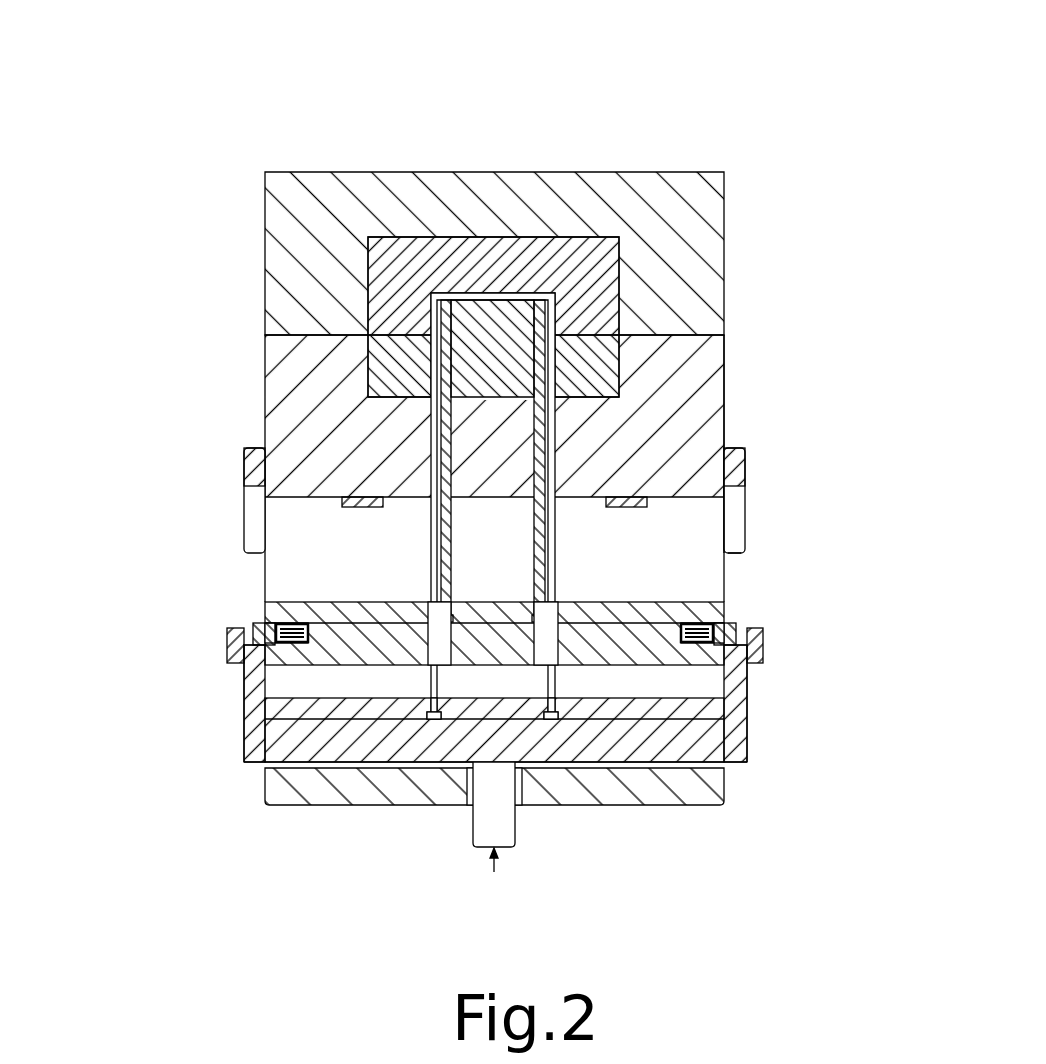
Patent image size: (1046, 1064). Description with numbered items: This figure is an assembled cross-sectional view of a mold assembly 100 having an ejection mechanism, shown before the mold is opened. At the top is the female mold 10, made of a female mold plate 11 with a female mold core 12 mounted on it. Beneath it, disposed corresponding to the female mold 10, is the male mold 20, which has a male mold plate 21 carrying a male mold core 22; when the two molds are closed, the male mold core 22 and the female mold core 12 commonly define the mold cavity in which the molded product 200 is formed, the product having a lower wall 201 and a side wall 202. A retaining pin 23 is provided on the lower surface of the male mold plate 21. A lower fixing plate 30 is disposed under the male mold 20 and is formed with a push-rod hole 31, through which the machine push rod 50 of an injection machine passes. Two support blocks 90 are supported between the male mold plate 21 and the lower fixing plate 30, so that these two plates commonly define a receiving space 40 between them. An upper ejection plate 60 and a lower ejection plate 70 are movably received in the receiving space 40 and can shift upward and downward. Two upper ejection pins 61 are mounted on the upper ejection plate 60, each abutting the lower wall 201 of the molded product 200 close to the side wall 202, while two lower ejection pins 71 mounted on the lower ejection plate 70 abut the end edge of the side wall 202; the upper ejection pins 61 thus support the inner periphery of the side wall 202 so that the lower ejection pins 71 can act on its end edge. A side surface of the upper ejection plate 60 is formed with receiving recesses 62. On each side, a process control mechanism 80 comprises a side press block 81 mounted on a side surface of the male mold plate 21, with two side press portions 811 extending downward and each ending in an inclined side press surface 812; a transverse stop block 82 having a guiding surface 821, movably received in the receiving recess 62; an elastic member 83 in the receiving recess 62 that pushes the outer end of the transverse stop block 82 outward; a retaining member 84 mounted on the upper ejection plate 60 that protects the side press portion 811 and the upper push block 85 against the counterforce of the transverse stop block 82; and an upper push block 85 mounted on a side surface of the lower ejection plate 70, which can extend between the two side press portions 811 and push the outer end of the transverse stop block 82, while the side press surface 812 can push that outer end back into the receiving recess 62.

The mold assembly 100 is at (192, 32).
The female mold 10 is at (127, 172).
The female mold plate 11 is at (318, 213).
The female mold core 12 is at (380, 298).
The male mold 20 is at (137, 322).
The male mold plate 21 is at (315, 410).
The male mold core 22 is at (372, 358).
The retaining pin 23 is at (662, 492).
The molded product 200 is at (625, 115).
The lower wall 201 is at (515, 297).
The side wall 202 is at (562, 297).
The receiving space 40 is at (320, 563).
The upper ejection plate 60 is at (330, 638).
The upper ejection pin 61 is at (692, 630).
The receiving recess 62 is at (547, 532).
The lower ejection plate 70 is at (328, 742).
The lower ejection pin 71 is at (553, 567).
The lower fixing plate 30 is at (328, 795).
The push-rod hole 31 is at (470, 800).
The machine push rod 50 is at (495, 818).
The process control mechanism 80 is at (877, 452).
The side press block 81 is at (748, 477).
The side press portion 811 is at (745, 528).
The side press surface 812 is at (738, 548).
The transverse stop block 82 is at (762, 648).
The guiding surface 821 is at (736, 632).
The elastic member 83 is at (737, 621).
The retaining member 84 is at (762, 662).
The upper push block 85 is at (745, 705).
The support block 90 is at (727, 766).